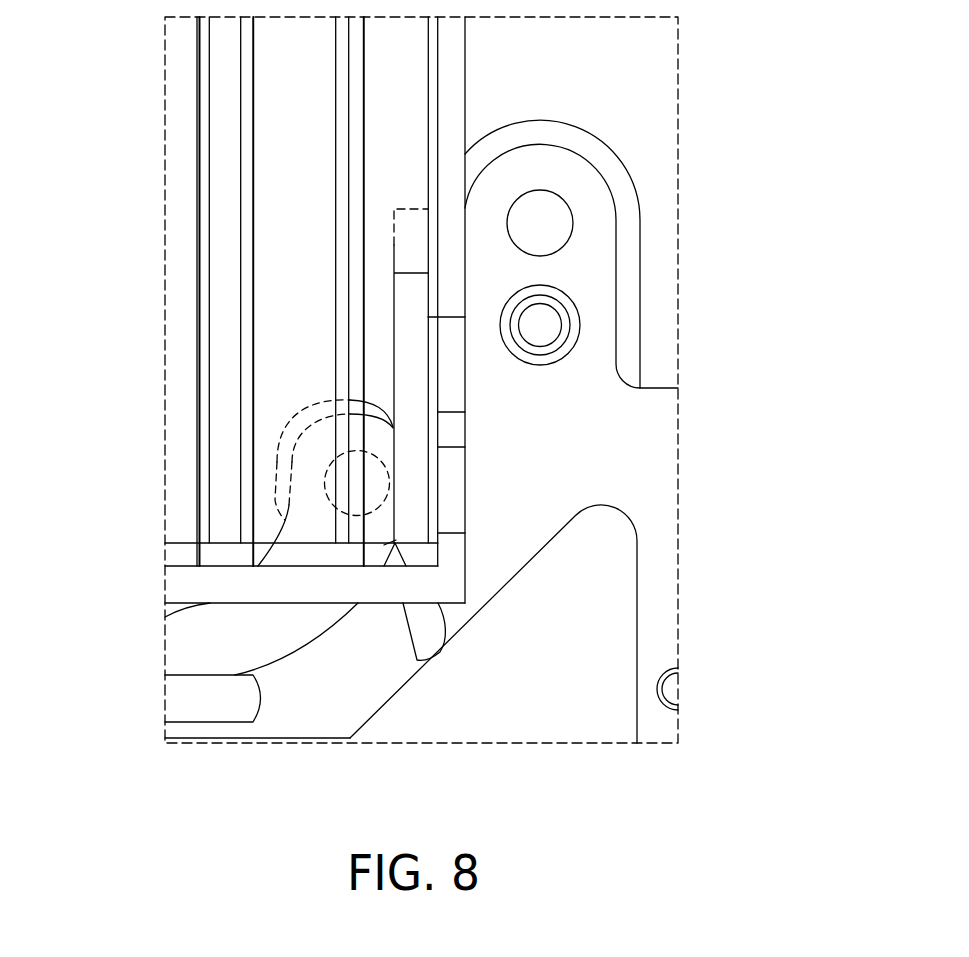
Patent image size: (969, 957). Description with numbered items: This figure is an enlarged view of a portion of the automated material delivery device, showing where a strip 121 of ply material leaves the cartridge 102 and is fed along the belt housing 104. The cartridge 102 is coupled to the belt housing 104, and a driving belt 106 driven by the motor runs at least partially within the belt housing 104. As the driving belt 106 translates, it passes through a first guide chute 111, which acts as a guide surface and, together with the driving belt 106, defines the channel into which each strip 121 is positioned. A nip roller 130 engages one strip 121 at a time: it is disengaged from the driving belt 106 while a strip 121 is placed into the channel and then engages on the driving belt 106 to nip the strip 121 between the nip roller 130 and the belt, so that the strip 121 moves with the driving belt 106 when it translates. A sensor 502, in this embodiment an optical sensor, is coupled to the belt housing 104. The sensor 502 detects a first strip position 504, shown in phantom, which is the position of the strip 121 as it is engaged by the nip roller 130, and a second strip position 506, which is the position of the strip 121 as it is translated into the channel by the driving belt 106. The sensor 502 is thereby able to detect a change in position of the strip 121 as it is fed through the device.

The cartridge 102 is at (465, 70).
The belt housing 104 is at (645, 442).
The driving belt 106 is at (587, 150).
The first guide chute 111 is at (425, 640).
The strip 121 is at (407, 326).
The nip roller 130 is at (285, 460).
The sensor 502 is at (577, 305).
The first strip position 504 is at (394, 230).
The second strip position 506 is at (407, 387).